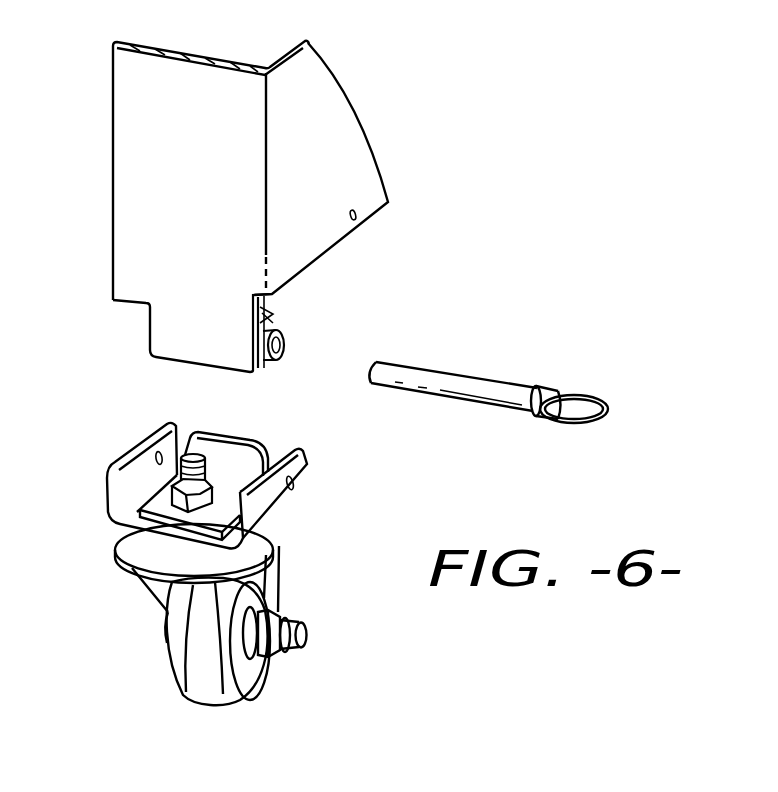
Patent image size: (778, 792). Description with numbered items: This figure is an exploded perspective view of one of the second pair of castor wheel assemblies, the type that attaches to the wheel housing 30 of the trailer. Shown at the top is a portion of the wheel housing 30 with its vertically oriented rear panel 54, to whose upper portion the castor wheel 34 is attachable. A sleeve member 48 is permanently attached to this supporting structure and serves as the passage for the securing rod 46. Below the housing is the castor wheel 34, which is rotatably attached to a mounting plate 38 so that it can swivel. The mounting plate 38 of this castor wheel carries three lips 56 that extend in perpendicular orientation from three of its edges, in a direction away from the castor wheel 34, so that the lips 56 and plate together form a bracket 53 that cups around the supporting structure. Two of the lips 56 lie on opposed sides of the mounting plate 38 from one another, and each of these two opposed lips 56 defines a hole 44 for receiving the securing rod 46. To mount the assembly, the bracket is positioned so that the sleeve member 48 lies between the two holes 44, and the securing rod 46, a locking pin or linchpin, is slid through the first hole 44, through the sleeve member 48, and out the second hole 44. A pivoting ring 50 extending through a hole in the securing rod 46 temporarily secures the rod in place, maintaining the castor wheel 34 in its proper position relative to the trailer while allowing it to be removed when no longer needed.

The wheel housing 30 is at (348, 153).
The rear panel 54 is at (137, 168).
The sleeve member 48 is at (285, 342).
The securing rod 46 is at (458, 375).
The pivoting ring 50 is at (587, 395).
The U-shaped channel bracket 53 is at (130, 478).
The hole 44 is at (158, 423).
The lip 56 is at (220, 452).
The mounting plate 38 is at (143, 527).
The castor wheel 34 is at (167, 643).